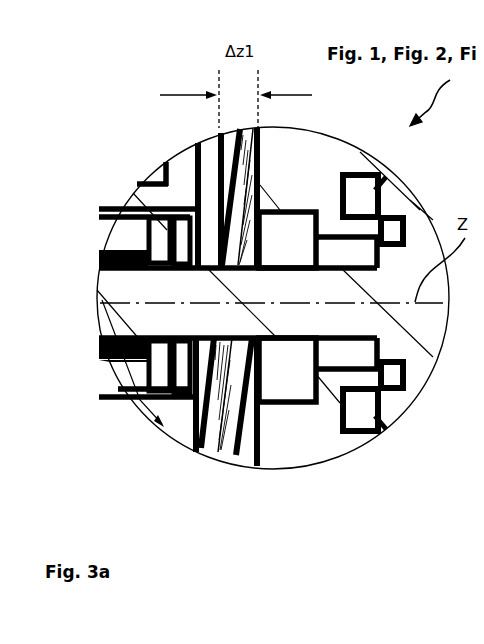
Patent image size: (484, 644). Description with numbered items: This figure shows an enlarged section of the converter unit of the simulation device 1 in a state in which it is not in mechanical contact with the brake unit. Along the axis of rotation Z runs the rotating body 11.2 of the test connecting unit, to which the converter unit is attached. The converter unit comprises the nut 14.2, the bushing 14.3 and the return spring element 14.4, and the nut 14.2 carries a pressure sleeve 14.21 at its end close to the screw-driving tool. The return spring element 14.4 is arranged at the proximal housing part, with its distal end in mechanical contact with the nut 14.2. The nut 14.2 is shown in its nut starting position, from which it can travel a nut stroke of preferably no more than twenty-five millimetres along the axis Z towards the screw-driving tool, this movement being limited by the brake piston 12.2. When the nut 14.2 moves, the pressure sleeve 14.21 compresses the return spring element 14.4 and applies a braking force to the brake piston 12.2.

The simulation device 1 is at (289, 298).
The rotating body 11.2 is at (135, 325).
The brake piston 12.2 is at (297, 425).
The nut 14.2 is at (167, 414).
The pressure sleeve 14.21 is at (197, 413).
The bushing 14.3 is at (130, 377).
The return spring element 14.4 is at (215, 458).